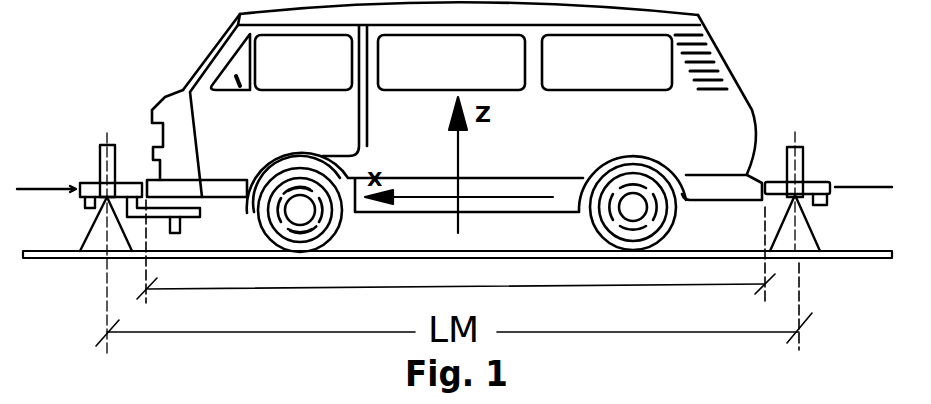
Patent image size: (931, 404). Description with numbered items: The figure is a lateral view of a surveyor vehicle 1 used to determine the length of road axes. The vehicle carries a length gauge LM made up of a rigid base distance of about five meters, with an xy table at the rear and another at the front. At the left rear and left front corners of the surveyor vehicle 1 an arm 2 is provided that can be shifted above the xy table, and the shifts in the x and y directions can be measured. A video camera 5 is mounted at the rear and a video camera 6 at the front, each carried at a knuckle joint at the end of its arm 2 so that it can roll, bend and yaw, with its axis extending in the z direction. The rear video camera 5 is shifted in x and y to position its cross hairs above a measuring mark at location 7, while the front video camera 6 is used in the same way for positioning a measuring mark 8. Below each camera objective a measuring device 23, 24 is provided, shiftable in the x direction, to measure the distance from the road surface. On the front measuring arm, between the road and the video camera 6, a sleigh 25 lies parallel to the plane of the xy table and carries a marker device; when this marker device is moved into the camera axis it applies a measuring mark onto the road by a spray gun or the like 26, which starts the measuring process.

The surveyor vehicle 1 is at (728, 128).
The arm 2 is at (817, 183).
The video camera 5 is at (803, 160).
The video camera 6 is at (100, 165).
The measuring mark location 7 is at (798, 247).
The measuring mark 8 is at (107, 246).
The measuring device 23 is at (827, 200).
The measuring device 24 is at (85, 205).
The sleigh 25 is at (190, 216).
The spray gun 26 is at (178, 234).